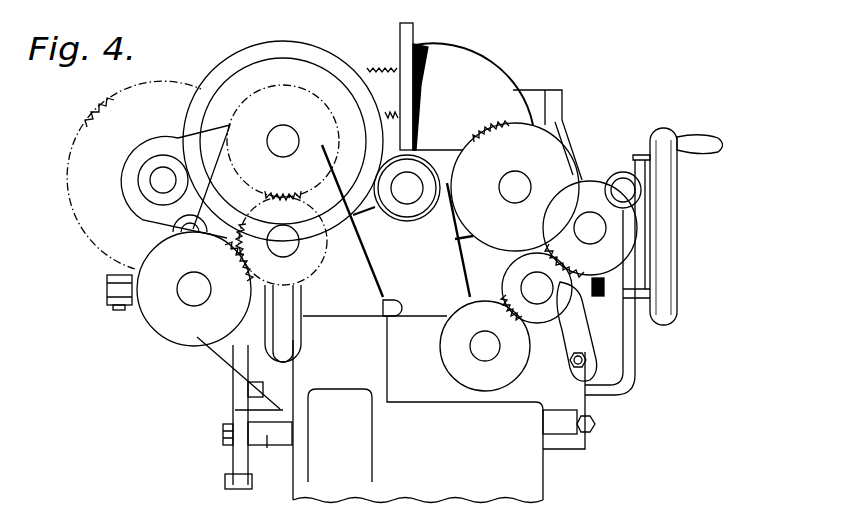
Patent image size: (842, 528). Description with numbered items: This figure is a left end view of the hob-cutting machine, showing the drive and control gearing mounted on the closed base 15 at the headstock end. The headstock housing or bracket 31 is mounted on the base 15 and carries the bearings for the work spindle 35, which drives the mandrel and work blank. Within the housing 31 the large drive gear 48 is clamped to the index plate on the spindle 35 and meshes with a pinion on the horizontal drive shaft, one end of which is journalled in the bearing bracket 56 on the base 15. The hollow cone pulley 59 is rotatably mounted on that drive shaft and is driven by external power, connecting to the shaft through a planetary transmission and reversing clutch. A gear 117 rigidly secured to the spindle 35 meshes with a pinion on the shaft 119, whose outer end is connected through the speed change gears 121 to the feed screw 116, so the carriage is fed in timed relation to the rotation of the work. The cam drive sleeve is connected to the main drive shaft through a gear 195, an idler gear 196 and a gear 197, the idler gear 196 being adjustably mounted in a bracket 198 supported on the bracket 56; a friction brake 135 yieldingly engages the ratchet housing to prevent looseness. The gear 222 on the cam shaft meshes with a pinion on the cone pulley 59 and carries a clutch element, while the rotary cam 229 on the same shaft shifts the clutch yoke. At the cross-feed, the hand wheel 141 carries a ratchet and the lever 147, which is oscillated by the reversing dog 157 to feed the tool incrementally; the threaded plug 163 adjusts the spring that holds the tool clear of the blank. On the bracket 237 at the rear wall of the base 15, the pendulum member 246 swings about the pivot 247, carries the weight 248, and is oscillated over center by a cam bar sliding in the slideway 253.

The closed base 15 is at (525, 481).
The housing or bracket 31 is at (500, 55).
The work spindle 35 is at (409, 205).
The large drive gear 48 is at (398, 70).
The bearing bracket 56 is at (373, 302).
The hollow cone pulley 59 is at (330, 62).
The feed screw 116 is at (485, 344).
The gear 117 is at (393, 133).
The shaft 119 is at (519, 188).
The speed change gears 121 is at (503, 283).
The friction brake 135 is at (107, 301).
The hand wheel 141 is at (663, 263).
The lever 147 is at (630, 355).
The reversing dog 157 is at (587, 444).
The threaded plug 163 is at (608, 288).
The gear 195 is at (165, 329).
The idler gear 196 is at (322, 251).
The gear 197 is at (250, 172).
The bracket 198 is at (305, 324).
The gear 222 is at (183, 75).
The rotary cam 229 is at (130, 185).
The bracket 237 is at (270, 446).
The pendulum member 246 is at (235, 407).
The pivot 247 is at (225, 431).
The weight 248 is at (235, 460).
The slideway 253 is at (240, 388).